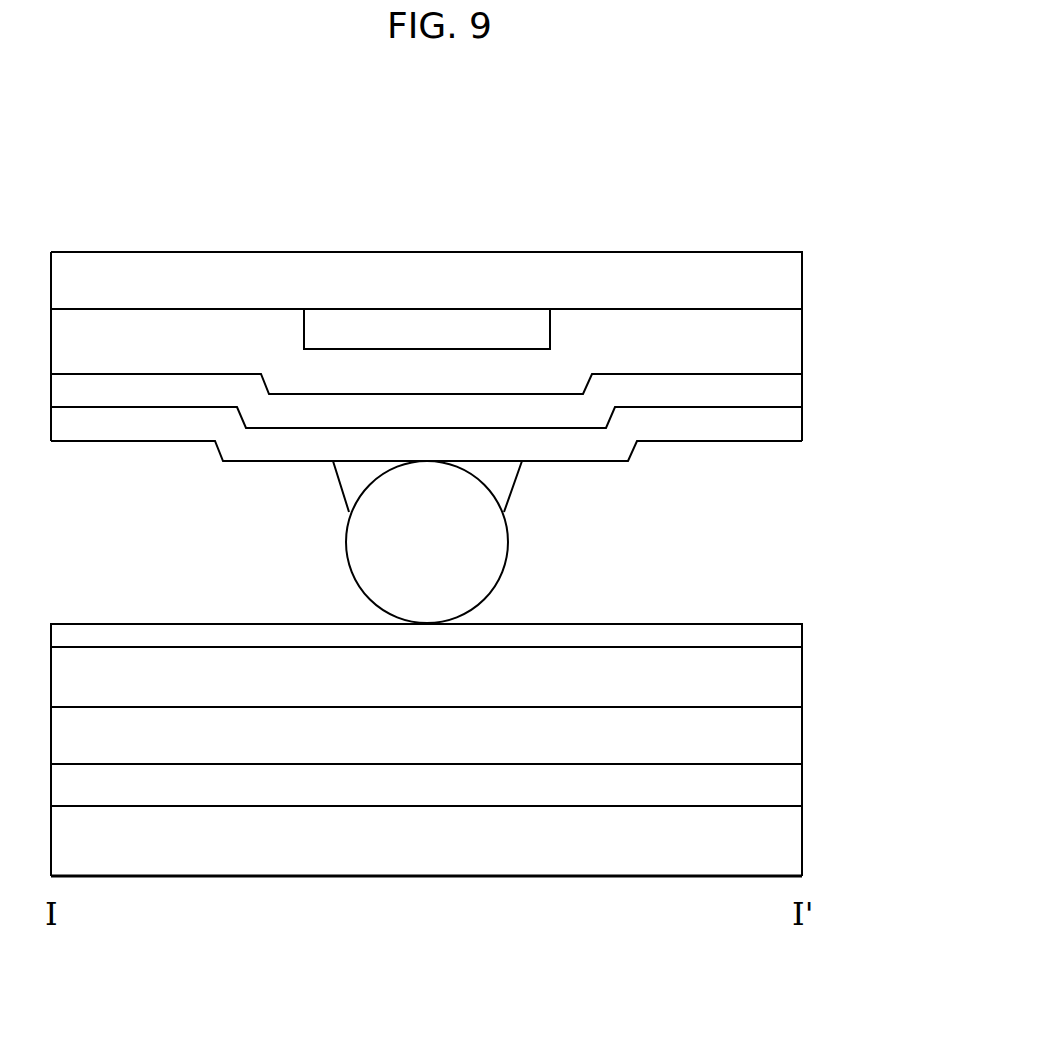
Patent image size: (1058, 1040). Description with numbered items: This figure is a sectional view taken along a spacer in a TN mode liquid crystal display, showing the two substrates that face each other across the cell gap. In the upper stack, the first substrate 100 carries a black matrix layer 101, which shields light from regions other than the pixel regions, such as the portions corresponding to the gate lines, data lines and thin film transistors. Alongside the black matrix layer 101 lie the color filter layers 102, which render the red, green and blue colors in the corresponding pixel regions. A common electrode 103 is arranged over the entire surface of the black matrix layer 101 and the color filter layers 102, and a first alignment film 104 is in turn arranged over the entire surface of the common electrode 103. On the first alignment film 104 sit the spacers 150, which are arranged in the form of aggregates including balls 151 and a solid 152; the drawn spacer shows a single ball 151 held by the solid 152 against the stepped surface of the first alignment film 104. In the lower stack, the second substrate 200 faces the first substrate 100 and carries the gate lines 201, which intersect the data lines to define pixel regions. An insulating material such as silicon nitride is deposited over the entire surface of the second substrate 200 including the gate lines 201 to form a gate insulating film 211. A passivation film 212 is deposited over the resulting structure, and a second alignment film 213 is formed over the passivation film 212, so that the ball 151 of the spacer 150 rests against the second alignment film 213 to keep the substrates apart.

The first substrate 100 is at (788, 288).
The black matrix layer 101 is at (432, 320).
The color filter layers 102 is at (788, 343).
The common electrode 103 is at (788, 388).
The first alignment film 104 is at (788, 433).
The spacers 150 is at (536, 542).
The balls 151 is at (488, 563).
The solid 152 is at (505, 481).
The second substrate 200 is at (788, 840).
The gate lines 201 is at (788, 789).
The gate insulating film 211 is at (788, 734).
The passivation film 212 is at (788, 677).
The second alignment film 213 is at (788, 638).